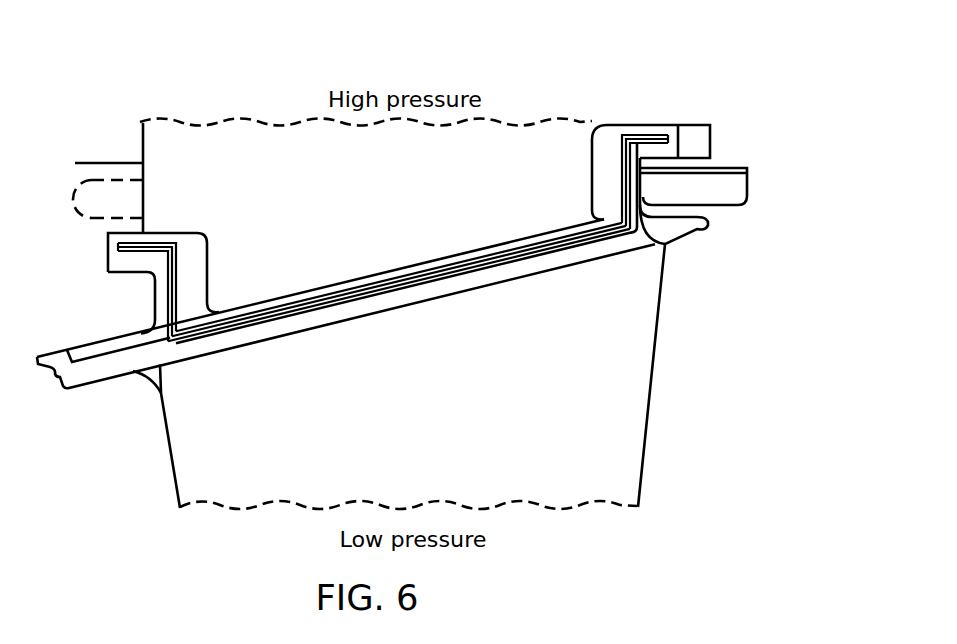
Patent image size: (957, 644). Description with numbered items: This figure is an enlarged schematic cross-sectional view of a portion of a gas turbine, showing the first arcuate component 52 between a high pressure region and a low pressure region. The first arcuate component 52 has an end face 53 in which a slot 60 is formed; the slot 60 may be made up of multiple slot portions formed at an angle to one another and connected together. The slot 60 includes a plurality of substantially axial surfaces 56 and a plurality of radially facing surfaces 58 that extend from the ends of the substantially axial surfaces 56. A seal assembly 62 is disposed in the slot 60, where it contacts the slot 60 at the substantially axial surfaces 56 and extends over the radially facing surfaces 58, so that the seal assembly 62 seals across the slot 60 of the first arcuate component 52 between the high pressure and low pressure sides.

The first arcuate component 52 is at (504, 80).
The end face 53 is at (323, 227).
The substantially axial surfaces 56 is at (499, 250).
The radially facing surfaces 58 is at (178, 292).
The slot 60 is at (178, 261).
The seal assembly 62 is at (410, 274).